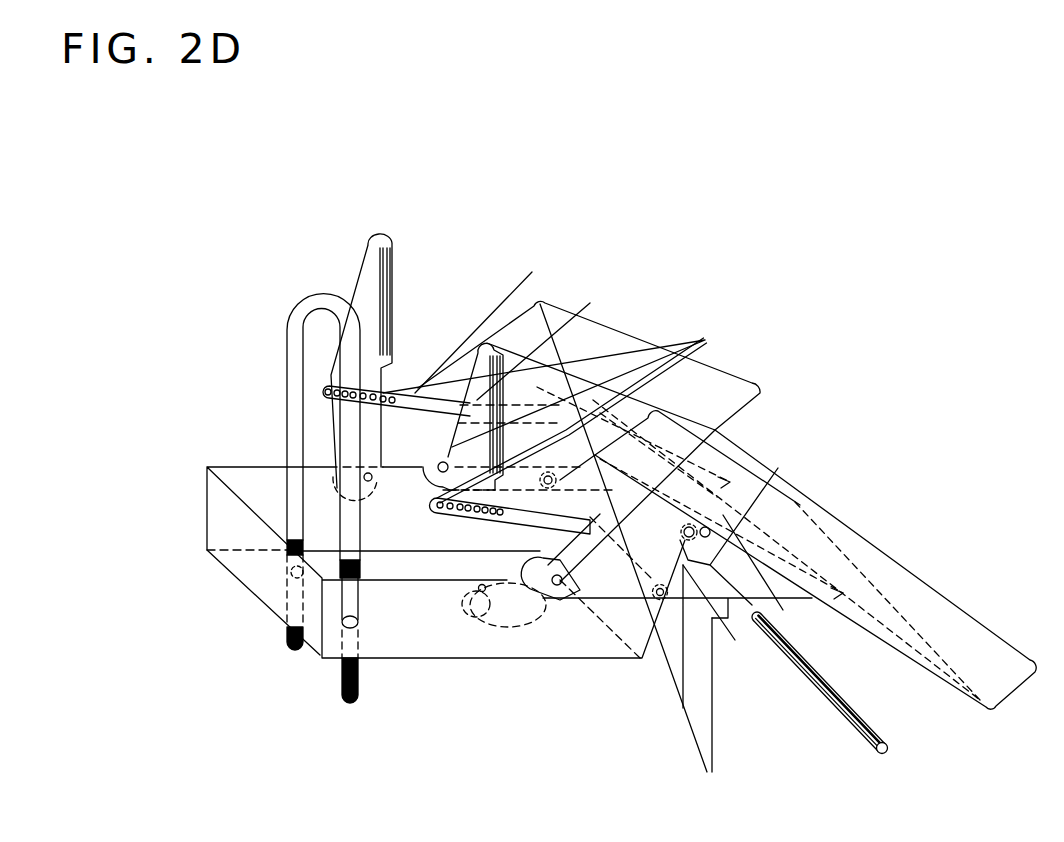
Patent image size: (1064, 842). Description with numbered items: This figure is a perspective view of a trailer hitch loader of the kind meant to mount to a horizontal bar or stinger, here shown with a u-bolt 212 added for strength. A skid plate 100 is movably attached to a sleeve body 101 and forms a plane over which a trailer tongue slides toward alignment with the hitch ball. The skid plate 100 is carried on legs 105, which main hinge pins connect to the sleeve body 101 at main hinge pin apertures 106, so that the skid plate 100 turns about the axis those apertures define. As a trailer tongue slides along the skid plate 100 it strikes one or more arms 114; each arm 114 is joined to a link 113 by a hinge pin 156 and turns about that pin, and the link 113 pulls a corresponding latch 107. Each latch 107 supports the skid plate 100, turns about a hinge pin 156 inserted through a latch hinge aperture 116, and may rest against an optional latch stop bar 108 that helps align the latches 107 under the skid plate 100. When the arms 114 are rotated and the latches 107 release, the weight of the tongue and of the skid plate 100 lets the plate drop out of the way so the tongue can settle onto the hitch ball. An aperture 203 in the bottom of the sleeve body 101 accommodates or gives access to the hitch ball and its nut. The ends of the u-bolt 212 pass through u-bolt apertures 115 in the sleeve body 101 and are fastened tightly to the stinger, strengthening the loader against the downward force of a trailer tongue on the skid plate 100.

The skid plate 100 is at (733, 445).
The sleeve body 101 is at (252, 593).
The legs 105 is at (735, 640).
The main hinge pin apertures 106 is at (557, 578).
The latch 107 is at (768, 470).
The latch stop bar 108 is at (822, 691).
The link 113 is at (527, 507).
The arm 114 is at (475, 356).
The u-bolt apertures 115 is at (303, 528).
The latch hinge aperture 116 is at (707, 772).
The hinge pin 156 is at (690, 527).
The aperture 203 is at (510, 630).
The u-bolt 212 is at (293, 362).